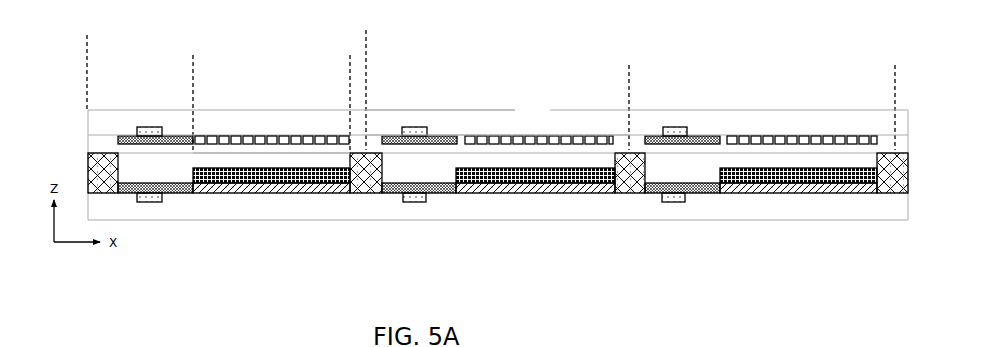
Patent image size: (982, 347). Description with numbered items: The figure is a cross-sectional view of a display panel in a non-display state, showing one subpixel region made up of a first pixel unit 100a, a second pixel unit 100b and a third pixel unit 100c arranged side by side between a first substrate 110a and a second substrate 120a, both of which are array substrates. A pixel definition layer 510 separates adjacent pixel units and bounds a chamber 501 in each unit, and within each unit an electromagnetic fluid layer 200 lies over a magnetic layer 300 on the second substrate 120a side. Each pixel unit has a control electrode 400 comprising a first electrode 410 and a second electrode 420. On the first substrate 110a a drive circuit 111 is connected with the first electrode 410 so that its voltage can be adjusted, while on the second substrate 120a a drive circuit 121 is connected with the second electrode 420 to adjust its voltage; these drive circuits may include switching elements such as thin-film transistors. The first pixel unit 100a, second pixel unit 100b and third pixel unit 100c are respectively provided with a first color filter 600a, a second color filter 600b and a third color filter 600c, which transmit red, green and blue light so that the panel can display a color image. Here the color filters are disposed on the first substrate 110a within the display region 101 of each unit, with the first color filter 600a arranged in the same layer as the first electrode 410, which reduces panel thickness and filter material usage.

The first pixel unit 100a is at (365, 46).
The second pixel unit 100b is at (629, 72).
The third pixel unit 100c is at (895, 76).
The display region 101 is at (350, 73).
The control electrode 400 is at (46, 85).
The first electrode 410 is at (130, 135).
The second electrode 420 is at (152, 183).
The pixel definition layer 510 is at (88, 156).
The chamber 501 is at (258, 160).
The drive circuit 111 is at (152, 131).
The drive circuit 121 is at (145, 203).
The first substrate 110a is at (478, 130).
The second substrate 120a is at (178, 207).
The first color filter 600a is at (212, 142).
The second color filter 600b is at (527, 140).
The third color filter 600c is at (802, 140).
The magnetic layer 300 is at (227, 187).
The electromagnetic fluid layer 200 is at (282, 184).